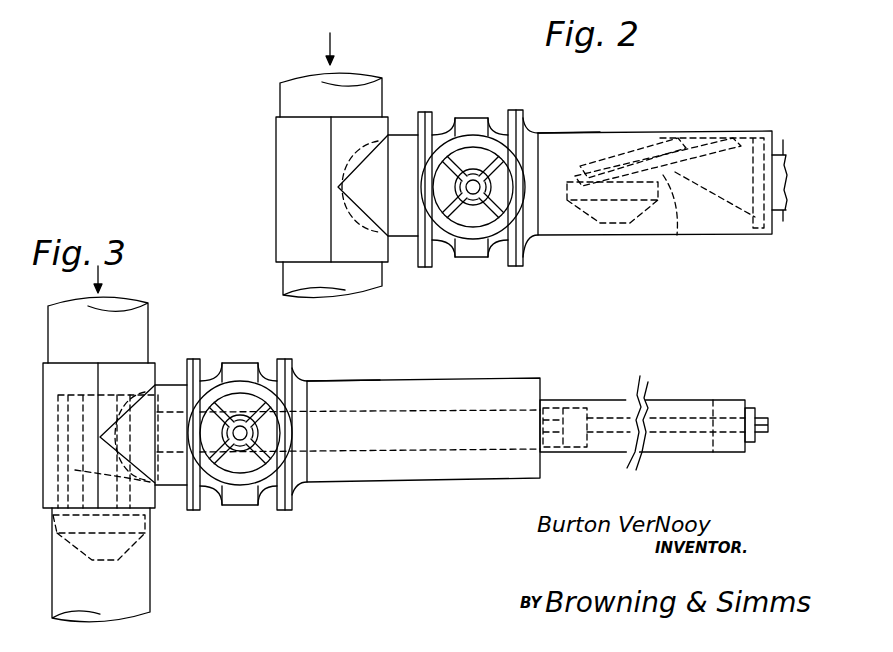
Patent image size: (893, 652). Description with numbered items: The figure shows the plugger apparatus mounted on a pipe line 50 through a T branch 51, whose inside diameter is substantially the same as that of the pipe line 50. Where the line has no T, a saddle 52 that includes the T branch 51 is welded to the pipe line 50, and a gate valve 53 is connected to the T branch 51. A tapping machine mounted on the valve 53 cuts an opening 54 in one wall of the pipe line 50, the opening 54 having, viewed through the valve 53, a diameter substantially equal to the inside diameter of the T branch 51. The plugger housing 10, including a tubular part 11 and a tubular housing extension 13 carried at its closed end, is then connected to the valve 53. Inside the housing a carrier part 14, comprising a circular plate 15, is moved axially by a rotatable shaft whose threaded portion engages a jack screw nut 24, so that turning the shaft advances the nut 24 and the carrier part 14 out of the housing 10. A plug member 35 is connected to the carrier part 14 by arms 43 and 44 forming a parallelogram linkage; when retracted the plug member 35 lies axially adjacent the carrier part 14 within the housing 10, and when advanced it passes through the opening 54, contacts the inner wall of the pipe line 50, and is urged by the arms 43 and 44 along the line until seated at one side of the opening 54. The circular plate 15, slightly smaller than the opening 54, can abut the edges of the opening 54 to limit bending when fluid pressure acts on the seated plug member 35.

In FIG. 2, the plugger housing 10 is at (647, 126).
In FIG. 3, the plugger housing 10 is at (420, 374).
In FIG. 2, the tubular part 11 is at (570, 132).
In FIG. 3, the tubular part 11 is at (378, 380).
In FIG. 2, the tubular housing extension 13 is at (776, 155).
In FIG. 3, the tubular housing extension 13 is at (573, 402).
In FIG. 2, the carrier part 14 is at (706, 145).
In FIG. 3, the carrier part 14 is at (60, 405).
In FIG. 2, the circular plate 15 is at (760, 230).
In FIG. 3, the circular plate 15 is at (157, 468).
In FIG. 3, the jack screw nut 24 is at (580, 418).
In FIG. 2, the plug member 35 is at (640, 224).
In FIG. 3, the plug member 35 is at (132, 550).
In FIG. 2, the arm 43 is at (677, 235).
In FIG. 3, the arm 43 is at (75, 470).
In FIG. 2, the arm 44 is at (625, 160).
In FIG. 3, the arm 44 is at (98, 440).
In FIG. 2, the pipe line 50 is at (280, 88).
In FIG. 3, the pipe line 50 is at (148, 320).
In FIG. 2, the T branch 51 is at (400, 145).
In FIG. 3, the T branch 51 is at (170, 385).
In FIG. 2, the saddle 52 is at (276, 136).
In FIG. 3, the saddle 52 is at (43, 376).
In FIG. 2, the gate valve 53 is at (481, 113).
In FIG. 3, the gate valve 53 is at (240, 362).
In FIG. 2, the opening 54 is at (330, 199).
In FIG. 3, the opening 54 is at (110, 400).